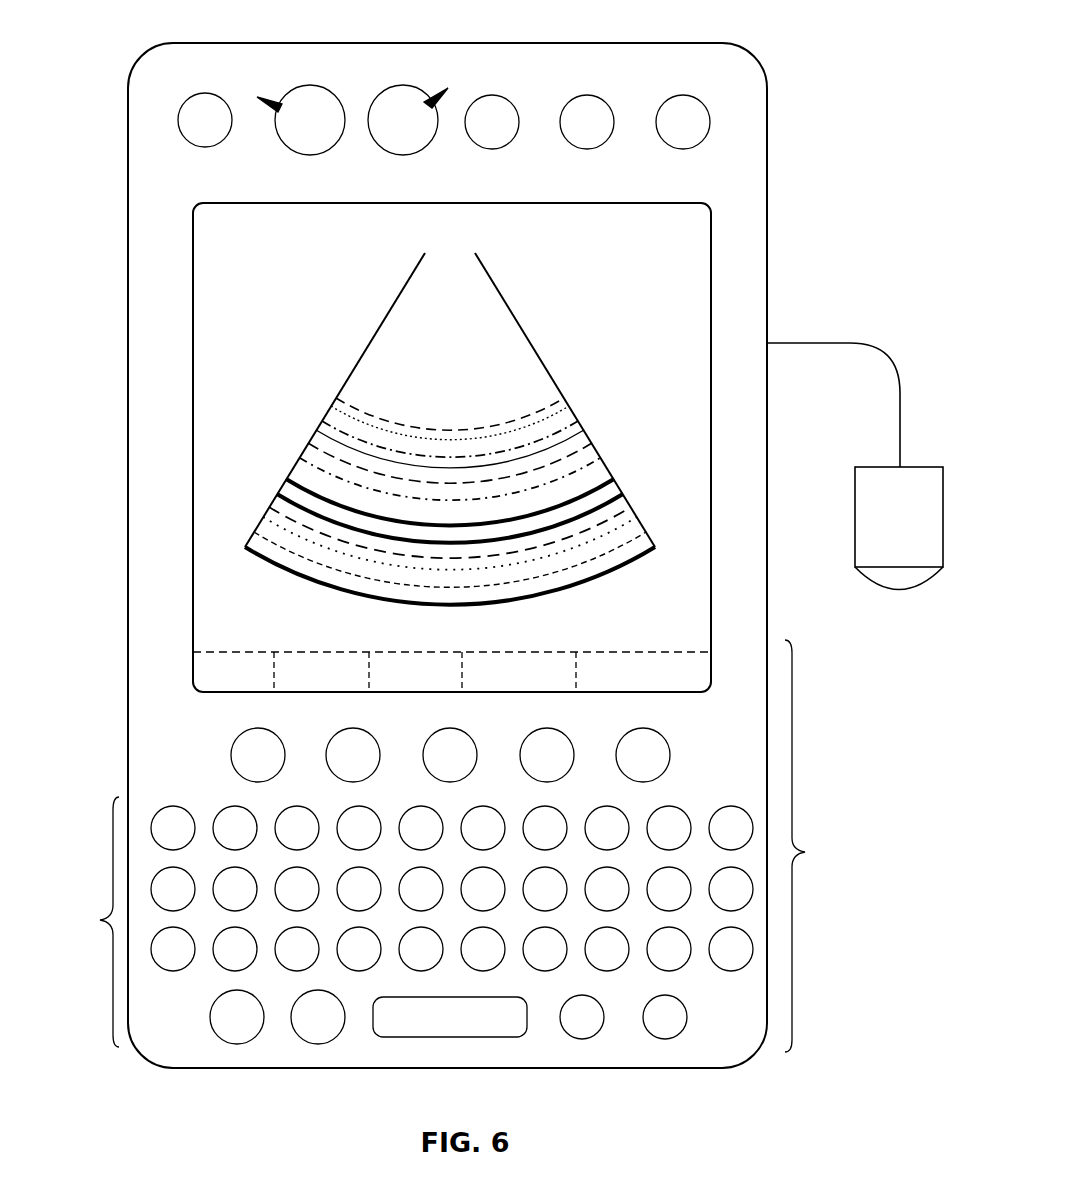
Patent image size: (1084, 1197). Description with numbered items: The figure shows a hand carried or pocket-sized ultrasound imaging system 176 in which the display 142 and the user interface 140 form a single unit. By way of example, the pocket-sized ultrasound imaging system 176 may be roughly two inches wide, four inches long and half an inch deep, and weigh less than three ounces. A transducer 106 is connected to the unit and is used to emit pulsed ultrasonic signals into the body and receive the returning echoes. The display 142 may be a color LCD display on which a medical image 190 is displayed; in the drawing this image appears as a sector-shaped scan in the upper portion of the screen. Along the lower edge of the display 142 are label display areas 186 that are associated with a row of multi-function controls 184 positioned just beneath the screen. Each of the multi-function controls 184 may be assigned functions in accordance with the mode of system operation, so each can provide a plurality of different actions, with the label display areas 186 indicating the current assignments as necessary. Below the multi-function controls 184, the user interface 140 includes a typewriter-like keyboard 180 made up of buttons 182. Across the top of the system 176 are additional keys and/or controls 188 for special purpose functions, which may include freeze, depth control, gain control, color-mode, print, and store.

The pocket-sized ultrasound imaging system 176 is at (147, 51).
The additional keys and/or controls 188 is at (457, 129).
The display 142 is at (712, 255).
The medical image 190 is at (340, 405).
The label display areas 186 is at (226, 647).
The multi-function controls 184 is at (470, 739).
The buttons 182 is at (452, 894).
The typewriter-like keyboard 180 is at (83, 922).
The user interface 140 is at (821, 846).
The transducer 106 is at (870, 467).